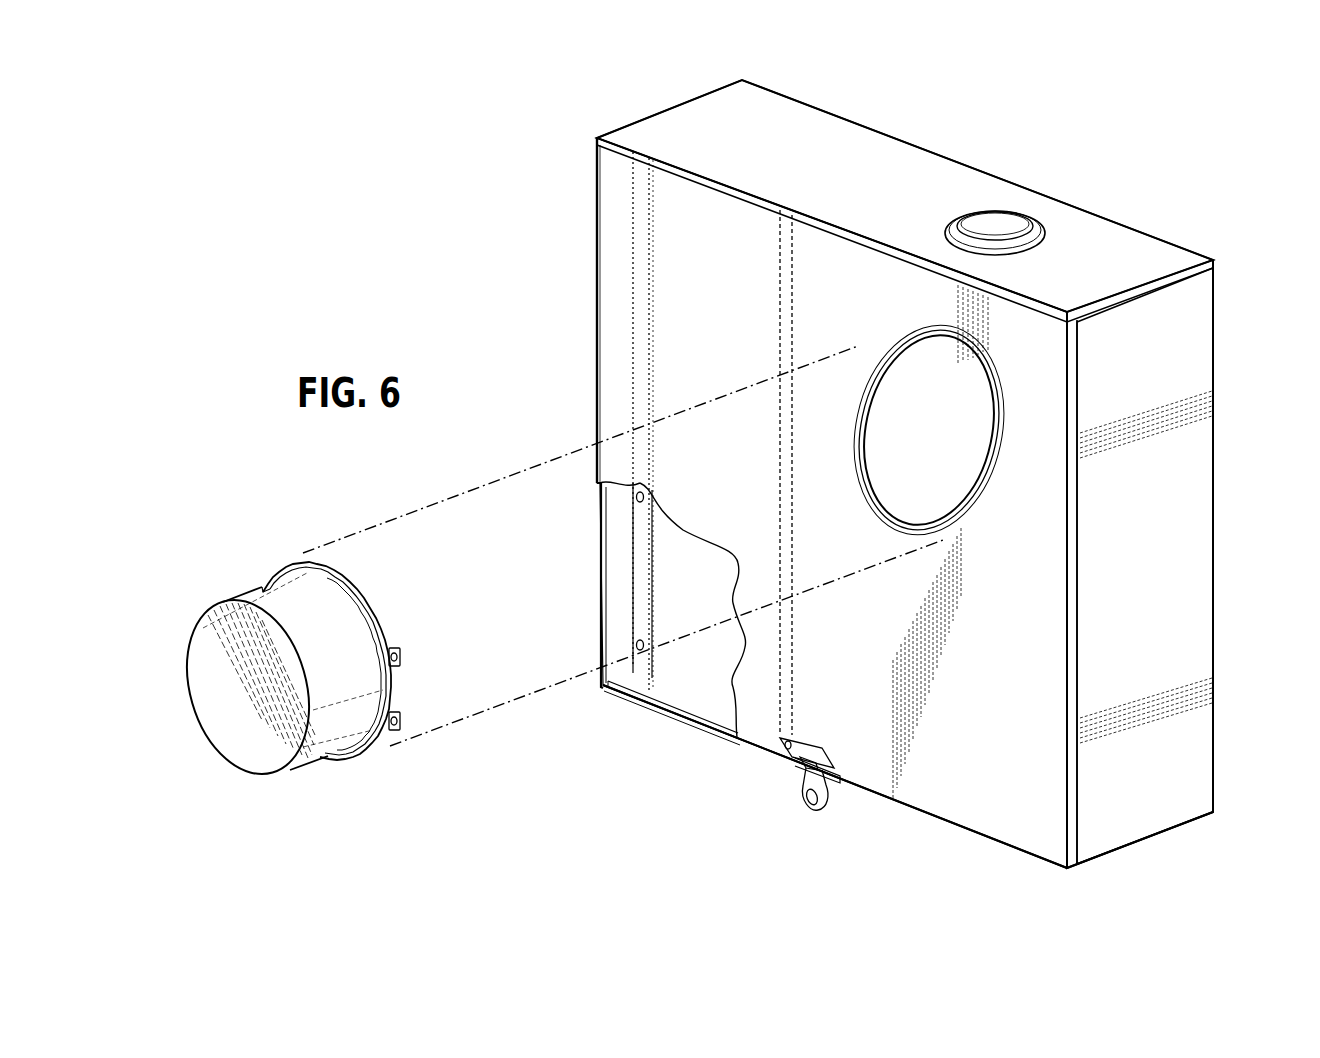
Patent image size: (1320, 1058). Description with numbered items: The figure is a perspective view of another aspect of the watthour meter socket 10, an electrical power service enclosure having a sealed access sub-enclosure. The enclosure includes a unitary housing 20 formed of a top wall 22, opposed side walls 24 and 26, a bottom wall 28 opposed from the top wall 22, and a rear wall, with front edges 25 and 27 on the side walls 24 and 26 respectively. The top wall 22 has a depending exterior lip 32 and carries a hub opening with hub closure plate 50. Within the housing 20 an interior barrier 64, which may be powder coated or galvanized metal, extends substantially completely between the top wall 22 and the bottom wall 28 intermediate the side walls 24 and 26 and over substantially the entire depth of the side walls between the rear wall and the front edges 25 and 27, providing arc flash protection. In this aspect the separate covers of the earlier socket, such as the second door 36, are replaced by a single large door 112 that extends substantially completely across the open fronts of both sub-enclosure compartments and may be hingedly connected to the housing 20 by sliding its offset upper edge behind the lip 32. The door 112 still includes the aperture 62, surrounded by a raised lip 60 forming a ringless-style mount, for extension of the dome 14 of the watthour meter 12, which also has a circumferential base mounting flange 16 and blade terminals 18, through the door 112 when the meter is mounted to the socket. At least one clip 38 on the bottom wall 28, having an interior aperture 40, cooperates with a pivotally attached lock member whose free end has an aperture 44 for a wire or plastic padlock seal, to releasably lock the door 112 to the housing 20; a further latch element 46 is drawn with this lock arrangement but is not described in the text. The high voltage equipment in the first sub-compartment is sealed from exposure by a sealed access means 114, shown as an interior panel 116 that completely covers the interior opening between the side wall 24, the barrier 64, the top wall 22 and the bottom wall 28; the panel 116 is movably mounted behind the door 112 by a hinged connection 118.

The watthour meter socket 10 is at (476, 160).
The watthour meter 12 is at (293, 655).
The dome 14 is at (215, 718).
The base mounting flange 16 is at (355, 592).
The blade terminals 18 is at (400, 652).
The housing 20 is at (972, 198).
The top wall 22 is at (1085, 225).
The side wall 24 is at (597, 258).
The front edge 25 is at (597, 400).
The side wall 26 is at (1200, 605).
The front edge 27 is at (1067, 840).
The bottom wall 28 is at (1150, 832).
The lip 32 is at (652, 160).
The second door 36 is at (1048, 375).
The clip 38 is at (790, 790).
The aperture 40 is at (803, 764).
The aperture 44 is at (790, 752).
The latch ring 46 is at (803, 800).
The hub closure plate 50 is at (998, 225).
The raised lip 60 is at (985, 525).
The aperture 62 is at (975, 415).
The interior barrier 64 is at (780, 236).
The single door 112 is at (960, 780).
The sealed access means 114 is at (670, 585).
The interior panel 116 is at (700, 678).
The hinged connection 118 is at (640, 532).